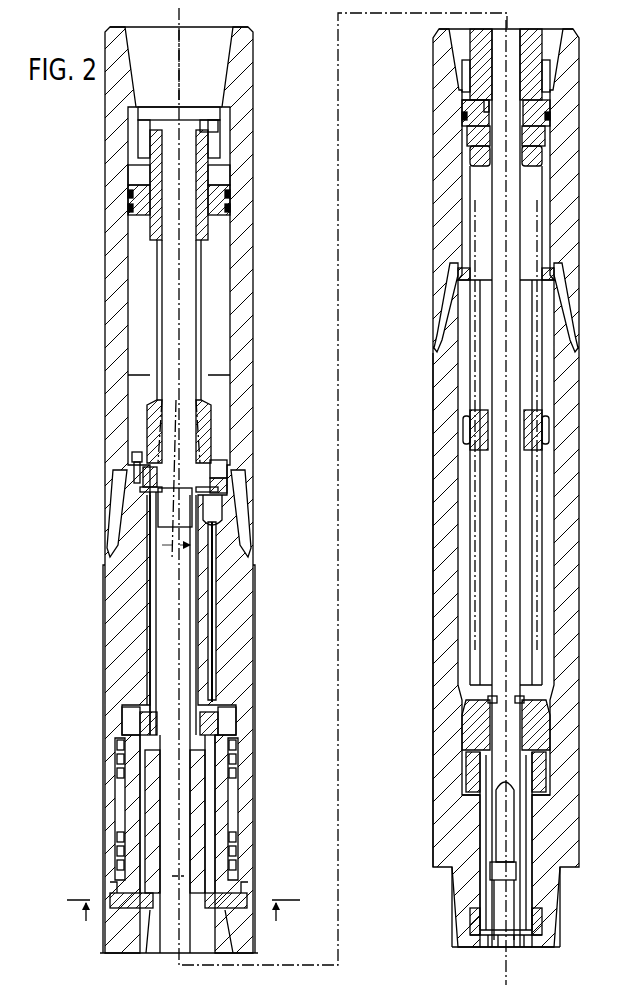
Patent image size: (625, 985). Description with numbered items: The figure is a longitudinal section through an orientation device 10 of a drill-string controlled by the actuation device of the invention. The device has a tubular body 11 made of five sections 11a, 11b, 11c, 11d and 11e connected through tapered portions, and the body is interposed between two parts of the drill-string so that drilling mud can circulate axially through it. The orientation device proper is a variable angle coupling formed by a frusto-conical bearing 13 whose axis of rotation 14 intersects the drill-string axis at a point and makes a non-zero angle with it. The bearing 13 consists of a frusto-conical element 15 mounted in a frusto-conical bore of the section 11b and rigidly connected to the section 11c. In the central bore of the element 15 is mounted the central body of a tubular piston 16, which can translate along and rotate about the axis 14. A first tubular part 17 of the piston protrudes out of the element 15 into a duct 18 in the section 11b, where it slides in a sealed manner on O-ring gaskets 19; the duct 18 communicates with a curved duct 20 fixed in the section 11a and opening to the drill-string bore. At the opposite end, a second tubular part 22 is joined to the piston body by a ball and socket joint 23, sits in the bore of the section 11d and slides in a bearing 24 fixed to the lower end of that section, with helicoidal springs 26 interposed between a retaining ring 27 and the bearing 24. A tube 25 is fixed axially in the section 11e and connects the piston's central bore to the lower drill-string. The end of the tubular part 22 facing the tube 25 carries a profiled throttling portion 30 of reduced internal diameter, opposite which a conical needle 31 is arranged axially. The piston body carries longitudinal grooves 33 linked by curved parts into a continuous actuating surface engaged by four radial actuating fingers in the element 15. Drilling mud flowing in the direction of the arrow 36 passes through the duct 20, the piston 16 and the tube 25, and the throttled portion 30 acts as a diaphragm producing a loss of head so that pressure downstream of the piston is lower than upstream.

The orientation device 10 is at (100, 300).
The tubular body 11 is at (580, 117).
The section 11a is at (247, 307).
The section 11b is at (238, 672).
The section 11c is at (433, 218).
The section 11d is at (437, 480).
The section 11e is at (433, 845).
The frusto-conical bearing 13 is at (118, 760).
The axis of rotation 14 is at (167, 630).
The frusto-conical element 15 is at (223, 798).
The tubular piston 16 is at (462, 66).
The first tubular part 17 is at (200, 615).
The duct 18 is at (147, 590).
The O-ring gaskets 19 is at (143, 506).
The curved duct 20 is at (187, 417).
The second tubular part 22 is at (475, 330).
The ball and socket joint 23 is at (463, 137).
The bearing 24 is at (462, 735).
The tube 25 is at (531, 867).
The helicoidal springs 26 is at (528, 483).
The retaining ring 27 is at (463, 173).
The profiled throttling portion 30 is at (442, 772).
The needle 31 is at (490, 825).
The longitudinal grooves 33 is at (203, 852).
The arrow 36 is at (176, 104).